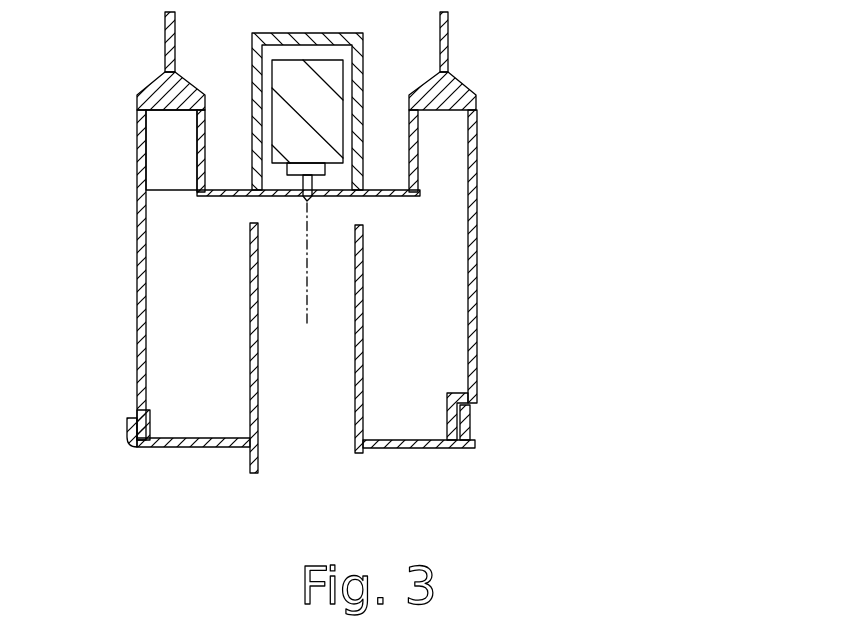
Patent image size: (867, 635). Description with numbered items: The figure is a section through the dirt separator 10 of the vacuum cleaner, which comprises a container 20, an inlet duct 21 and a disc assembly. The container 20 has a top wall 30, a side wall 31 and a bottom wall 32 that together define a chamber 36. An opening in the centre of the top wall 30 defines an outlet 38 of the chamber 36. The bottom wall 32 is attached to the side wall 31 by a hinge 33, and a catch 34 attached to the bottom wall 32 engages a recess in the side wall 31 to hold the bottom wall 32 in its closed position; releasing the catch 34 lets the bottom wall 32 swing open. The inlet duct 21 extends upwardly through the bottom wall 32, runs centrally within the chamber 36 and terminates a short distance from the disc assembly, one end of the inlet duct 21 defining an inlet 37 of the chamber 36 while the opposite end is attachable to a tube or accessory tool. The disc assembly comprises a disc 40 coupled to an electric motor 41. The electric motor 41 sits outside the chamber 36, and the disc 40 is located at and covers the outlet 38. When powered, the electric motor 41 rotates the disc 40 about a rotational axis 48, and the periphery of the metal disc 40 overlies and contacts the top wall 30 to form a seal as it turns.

The dispensing assembly 10 is at (533, 60).
The container 20 is at (477, 284).
The inlet duct 21 is at (355, 345).
The top wall 30 is at (178, 112).
The side wall 31 is at (137, 355).
The bottom wall 32 is at (410, 449).
The hinge 33 is at (470, 411).
The catch 34 is at (128, 418).
The chamber 36 is at (200, 300).
The inlet 37 is at (289, 226).
The outlet 38 is at (228, 190).
The disc 40 is at (395, 197).
The electric motor 41 is at (332, 130).
The rotational axis 48 is at (307, 326).